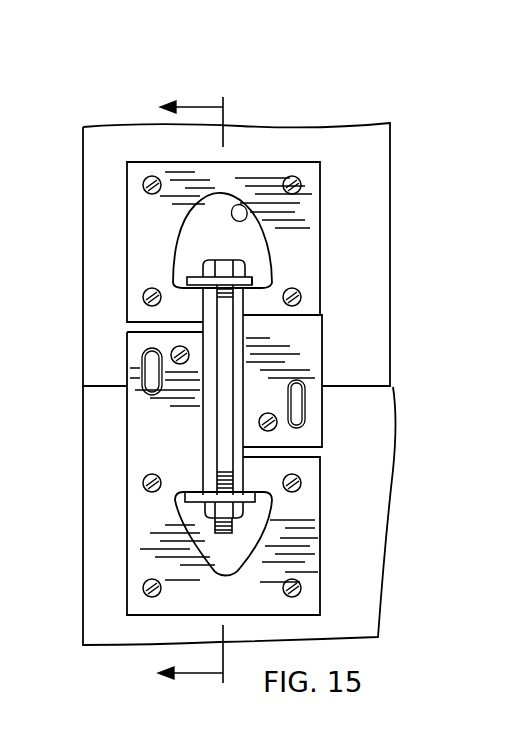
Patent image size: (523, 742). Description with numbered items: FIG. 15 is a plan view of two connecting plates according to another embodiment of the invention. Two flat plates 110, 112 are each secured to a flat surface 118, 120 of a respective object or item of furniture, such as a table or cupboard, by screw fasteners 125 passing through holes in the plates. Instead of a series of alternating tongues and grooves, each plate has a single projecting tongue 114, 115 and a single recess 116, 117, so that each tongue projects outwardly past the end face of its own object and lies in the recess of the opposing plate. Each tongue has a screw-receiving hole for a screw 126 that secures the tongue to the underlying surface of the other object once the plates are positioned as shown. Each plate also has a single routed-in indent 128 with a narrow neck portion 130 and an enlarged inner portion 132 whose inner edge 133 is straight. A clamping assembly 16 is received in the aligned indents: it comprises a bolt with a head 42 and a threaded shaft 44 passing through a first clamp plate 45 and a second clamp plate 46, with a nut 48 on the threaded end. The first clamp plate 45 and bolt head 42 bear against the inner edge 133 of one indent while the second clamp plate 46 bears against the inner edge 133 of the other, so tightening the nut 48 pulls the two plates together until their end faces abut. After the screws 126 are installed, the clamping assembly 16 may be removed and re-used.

The clamping assembly 16 is at (222, 236).
The bolt head 42 is at (191, 268).
The threaded shaft 44 is at (220, 417).
The first clamp plate 45 is at (183, 281).
The second clamp plate 46 is at (178, 502).
The nut 48 is at (207, 515).
The first flat plate 110 is at (320, 210).
The second flat plate 112 is at (310, 503).
The tongue 114 is at (313, 428).
The tongue 115 is at (137, 343).
The recess 116 is at (142, 322).
The recess 117 is at (305, 460).
The flat surface 118 is at (373, 350).
The flat surface 120 is at (345, 582).
The screw fasteners 125 is at (296, 183).
The screw 126 is at (267, 412).
The indent 128 is at (254, 246).
The narrow neck portion 130 is at (245, 315).
The enlarged inner portion 132 is at (236, 197).
The inner edge 133 is at (258, 280).